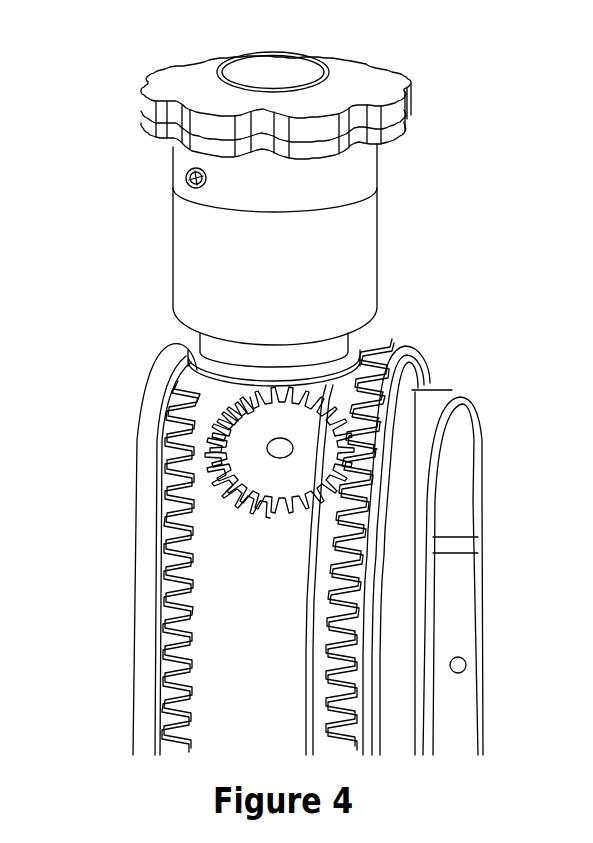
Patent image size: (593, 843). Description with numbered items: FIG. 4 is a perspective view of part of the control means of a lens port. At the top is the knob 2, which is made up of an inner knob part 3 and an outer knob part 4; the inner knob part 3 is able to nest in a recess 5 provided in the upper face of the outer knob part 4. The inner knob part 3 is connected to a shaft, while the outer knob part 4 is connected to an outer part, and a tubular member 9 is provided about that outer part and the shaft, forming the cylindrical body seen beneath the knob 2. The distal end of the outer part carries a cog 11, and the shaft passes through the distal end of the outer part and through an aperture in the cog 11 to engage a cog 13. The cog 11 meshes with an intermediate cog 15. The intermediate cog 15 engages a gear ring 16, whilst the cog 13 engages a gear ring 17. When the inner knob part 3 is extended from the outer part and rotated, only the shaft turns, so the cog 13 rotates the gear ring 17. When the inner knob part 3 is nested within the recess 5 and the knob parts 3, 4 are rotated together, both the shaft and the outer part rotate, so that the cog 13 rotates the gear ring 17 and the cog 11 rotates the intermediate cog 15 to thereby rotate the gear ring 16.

The knob 2 is at (425, 229).
The inner knob part 3 is at (278, 72).
The outer knob part 4 is at (357, 77).
The recess 5 is at (222, 78).
The tubular member 9 is at (172, 233).
The cog 11 is at (193, 390).
The cog 13 is at (207, 423).
The intermediate cog 15 is at (243, 458).
The gear ring 16 is at (418, 372).
The gear ring 17 is at (162, 657).